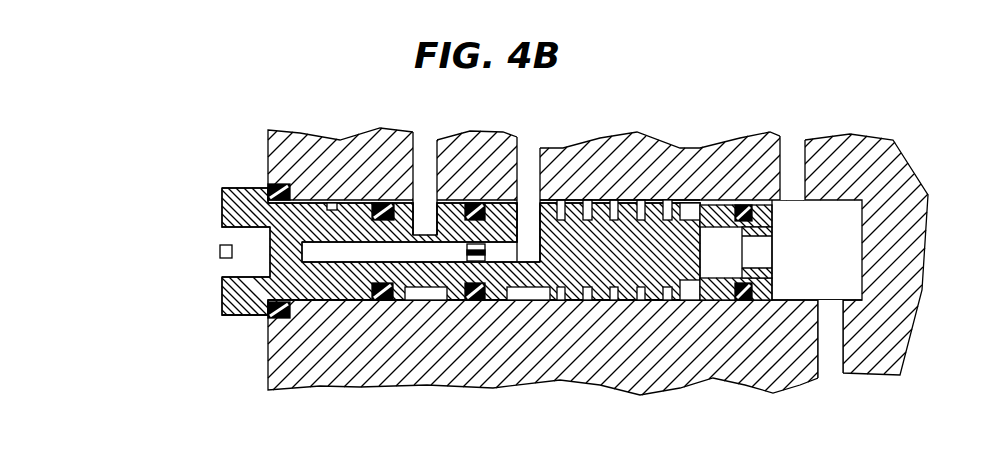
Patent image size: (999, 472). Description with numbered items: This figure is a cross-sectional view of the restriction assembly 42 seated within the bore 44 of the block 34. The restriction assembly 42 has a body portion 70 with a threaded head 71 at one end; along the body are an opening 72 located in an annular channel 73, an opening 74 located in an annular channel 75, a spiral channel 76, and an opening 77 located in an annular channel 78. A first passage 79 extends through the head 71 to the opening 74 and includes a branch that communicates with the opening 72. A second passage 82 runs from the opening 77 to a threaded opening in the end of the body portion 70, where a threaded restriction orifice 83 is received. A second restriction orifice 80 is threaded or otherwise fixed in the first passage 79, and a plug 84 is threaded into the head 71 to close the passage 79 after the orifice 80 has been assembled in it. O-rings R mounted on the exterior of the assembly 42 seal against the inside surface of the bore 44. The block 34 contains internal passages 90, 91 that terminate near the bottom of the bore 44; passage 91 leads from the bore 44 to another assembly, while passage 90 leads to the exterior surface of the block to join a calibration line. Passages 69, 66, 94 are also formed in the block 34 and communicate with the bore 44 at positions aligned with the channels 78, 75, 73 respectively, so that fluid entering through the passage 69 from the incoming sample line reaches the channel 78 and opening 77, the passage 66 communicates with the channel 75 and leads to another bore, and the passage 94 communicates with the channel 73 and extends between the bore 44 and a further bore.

The block 34 is at (627, 380).
The restriction assembly 42 is at (240, 316).
The bore 44 is at (828, 247).
The passage 66 is at (526, 143).
The passage 69 is at (698, 203).
The body portion 70 is at (343, 202).
The threaded head 71 is at (232, 188).
The opening 72 is at (478, 203).
The annular channel 73 is at (427, 297).
The opening 74 is at (560, 203).
The annular channel 75 is at (533, 296).
The spiral channel 76 is at (637, 220).
The opening 77 is at (696, 203).
The annular channel 78 is at (688, 297).
The first passage 79 is at (317, 255).
The second restriction orifice 80 is at (487, 260).
The second passage 82 is at (725, 248).
The threaded restriction orifice 83 is at (772, 230).
The plug 84 is at (265, 240).
The passage 90 is at (828, 377).
The passage 91 is at (792, 150).
The passage 94 is at (421, 143).
The O-rings R is at (270, 188).